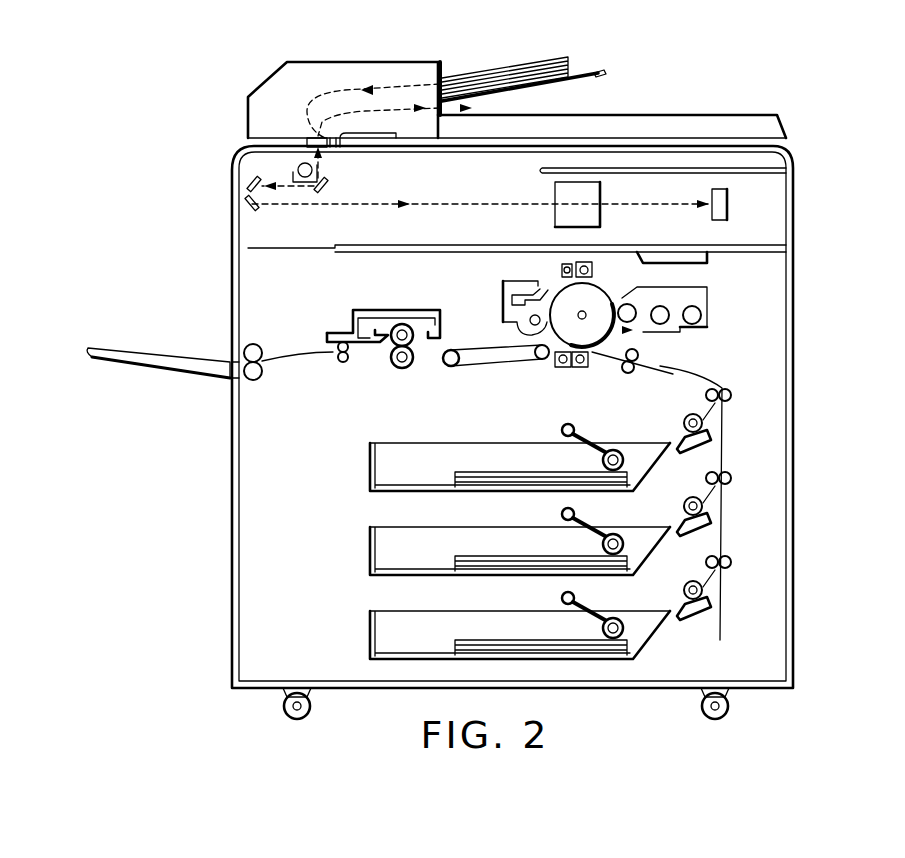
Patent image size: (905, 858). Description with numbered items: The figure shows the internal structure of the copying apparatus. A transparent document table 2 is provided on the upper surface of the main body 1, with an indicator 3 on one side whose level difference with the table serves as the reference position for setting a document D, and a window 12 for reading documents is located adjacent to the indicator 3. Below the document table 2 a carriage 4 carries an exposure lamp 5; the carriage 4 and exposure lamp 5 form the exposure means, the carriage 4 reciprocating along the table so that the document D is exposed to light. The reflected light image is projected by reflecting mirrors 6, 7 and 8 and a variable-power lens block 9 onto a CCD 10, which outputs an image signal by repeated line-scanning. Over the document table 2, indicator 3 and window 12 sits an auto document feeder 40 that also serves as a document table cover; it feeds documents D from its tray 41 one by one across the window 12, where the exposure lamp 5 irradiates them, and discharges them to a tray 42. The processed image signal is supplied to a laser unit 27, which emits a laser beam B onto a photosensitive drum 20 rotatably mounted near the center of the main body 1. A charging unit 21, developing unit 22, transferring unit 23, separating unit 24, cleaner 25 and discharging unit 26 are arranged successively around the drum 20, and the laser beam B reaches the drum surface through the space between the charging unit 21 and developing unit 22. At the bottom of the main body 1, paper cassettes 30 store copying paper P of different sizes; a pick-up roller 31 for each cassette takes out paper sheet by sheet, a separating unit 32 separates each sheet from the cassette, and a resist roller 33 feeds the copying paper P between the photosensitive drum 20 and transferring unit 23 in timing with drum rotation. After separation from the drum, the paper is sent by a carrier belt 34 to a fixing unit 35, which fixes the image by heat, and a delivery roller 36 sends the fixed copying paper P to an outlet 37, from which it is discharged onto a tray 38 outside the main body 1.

The main body 1 is at (794, 194).
The document table 2 is at (531, 150).
The indicator 3 is at (378, 133).
The carriage 4 is at (300, 183).
The exposure lamp 5 is at (313, 170).
The reflecting mirror 6 is at (329, 187).
The reflecting mirror 7 is at (247, 182).
The reflecting mirror 8 is at (259, 207).
The variable-power lens block 9 is at (600, 186).
The CCD 10 is at (727, 208).
The window 12 is at (330, 147).
The photosensitive drum 20 is at (561, 290).
The charging unit 21 is at (598, 262).
The developing unit 22 is at (693, 284).
The transferring unit 23 is at (575, 367).
The separating unit 24 is at (562, 367).
The cleaner 25 is at (503, 303).
The discharging unit 26 is at (560, 263).
The laser unit 27 is at (707, 258).
The paper cassette 30 is at (370, 462).
The pick-up roller 31 is at (634, 447).
The separating unit 32 is at (697, 418).
The resist roller 33 is at (627, 377).
The carrier belt 34 is at (475, 347).
The fixing unit 35 is at (394, 309).
The delivery roller 36 is at (254, 343).
The outlet 37 is at (237, 378).
The tray 38 is at (147, 368).
The auto document feeder 40 is at (382, 62).
The tray 41 is at (597, 67).
The tray 42 is at (682, 115).
The laser beam B is at (617, 284).
The document D is at (527, 58).
The copying paper P is at (465, 472).